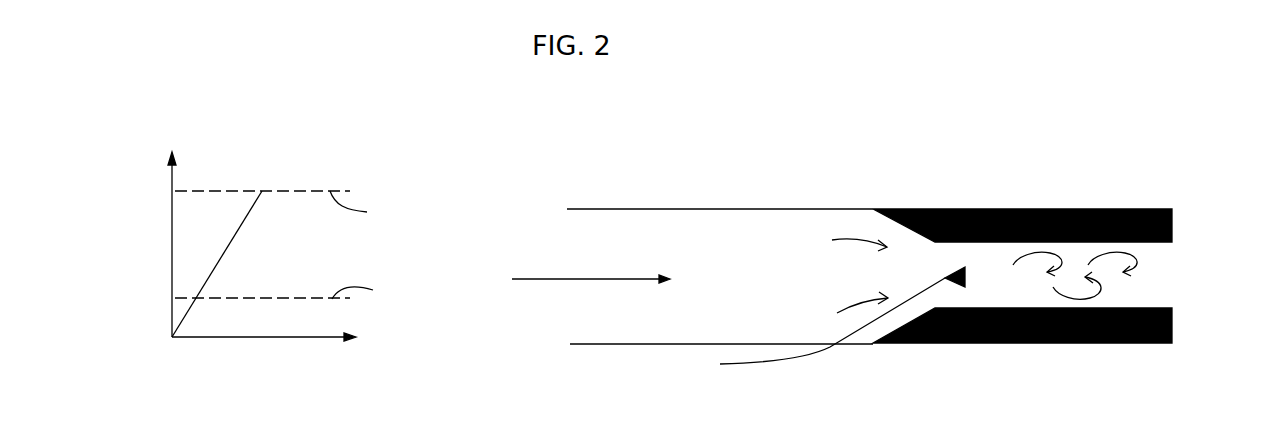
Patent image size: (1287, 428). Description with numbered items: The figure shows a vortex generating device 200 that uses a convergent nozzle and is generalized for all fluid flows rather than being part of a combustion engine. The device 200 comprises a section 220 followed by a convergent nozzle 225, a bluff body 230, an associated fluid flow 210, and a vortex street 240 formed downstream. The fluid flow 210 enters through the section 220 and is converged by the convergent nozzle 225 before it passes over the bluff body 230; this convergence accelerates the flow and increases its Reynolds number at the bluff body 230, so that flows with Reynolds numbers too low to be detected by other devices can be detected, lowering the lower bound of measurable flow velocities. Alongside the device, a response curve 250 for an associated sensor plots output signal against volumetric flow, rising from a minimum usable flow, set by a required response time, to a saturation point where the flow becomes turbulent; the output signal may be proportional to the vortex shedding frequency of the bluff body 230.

The vortex generating device 200 is at (664, 125).
The fluid flow 210 is at (555, 280).
The section 220 is at (717, 209).
The convergent nozzle 225 is at (900, 209).
The bluff body 230 is at (824, 323).
The vortex street 240 is at (1158, 268).
The response curve 250 is at (250, 212).